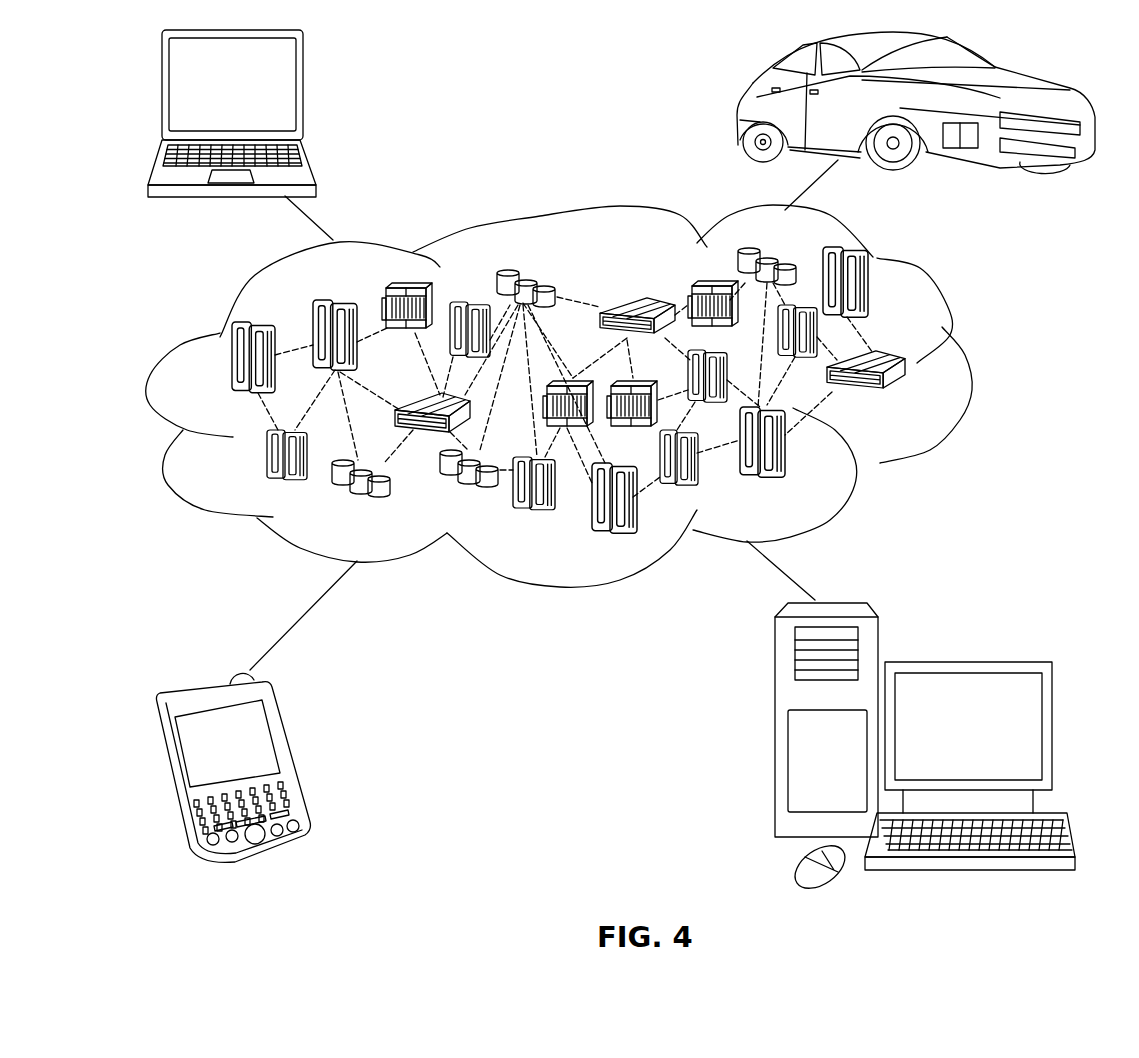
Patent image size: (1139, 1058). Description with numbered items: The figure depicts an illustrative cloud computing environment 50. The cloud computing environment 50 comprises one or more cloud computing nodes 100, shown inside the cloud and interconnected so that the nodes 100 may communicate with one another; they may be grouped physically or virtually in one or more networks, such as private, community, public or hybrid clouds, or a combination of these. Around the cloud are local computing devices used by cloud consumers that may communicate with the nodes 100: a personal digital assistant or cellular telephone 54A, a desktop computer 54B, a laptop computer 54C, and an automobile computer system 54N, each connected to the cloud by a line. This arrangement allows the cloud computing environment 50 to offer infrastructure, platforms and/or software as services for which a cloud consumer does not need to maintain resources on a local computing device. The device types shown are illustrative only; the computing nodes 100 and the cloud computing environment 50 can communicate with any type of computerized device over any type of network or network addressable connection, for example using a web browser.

The cloud computing environment 50 is at (967, 370).
The cloud computing nodes 100 is at (910, 399).
The personal digital assistant (PDA) or cellular telephone 54A is at (290, 753).
The desktop computer 54B is at (963, 662).
The laptop computer 54C is at (303, 93).
The automobile computer system 54N is at (742, 108).